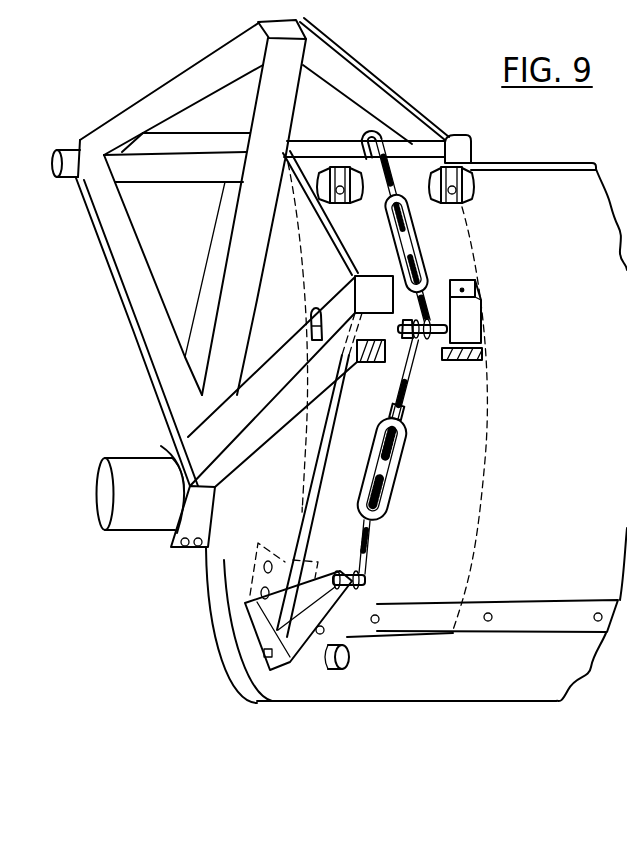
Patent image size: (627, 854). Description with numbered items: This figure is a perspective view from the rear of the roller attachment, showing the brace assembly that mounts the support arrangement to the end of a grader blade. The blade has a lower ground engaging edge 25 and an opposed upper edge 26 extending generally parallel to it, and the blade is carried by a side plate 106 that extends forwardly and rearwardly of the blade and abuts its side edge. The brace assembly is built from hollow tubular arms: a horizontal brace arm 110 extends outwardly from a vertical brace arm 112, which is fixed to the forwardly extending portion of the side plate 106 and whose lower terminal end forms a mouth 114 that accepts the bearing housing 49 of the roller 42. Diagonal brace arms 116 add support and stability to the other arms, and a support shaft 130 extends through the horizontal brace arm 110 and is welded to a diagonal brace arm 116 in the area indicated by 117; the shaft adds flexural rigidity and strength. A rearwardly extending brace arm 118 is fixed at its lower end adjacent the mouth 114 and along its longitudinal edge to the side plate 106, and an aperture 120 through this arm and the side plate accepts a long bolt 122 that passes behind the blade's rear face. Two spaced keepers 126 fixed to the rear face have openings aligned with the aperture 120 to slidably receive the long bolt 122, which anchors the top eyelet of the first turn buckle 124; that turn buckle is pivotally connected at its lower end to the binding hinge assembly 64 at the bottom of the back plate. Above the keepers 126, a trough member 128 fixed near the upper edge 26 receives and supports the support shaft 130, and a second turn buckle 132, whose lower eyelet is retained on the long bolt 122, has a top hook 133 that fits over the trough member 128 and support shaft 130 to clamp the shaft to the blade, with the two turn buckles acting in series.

The lower ground engaging edge 25 is at (503, 623).
The upper edge 26 is at (543, 163).
The roller 42 is at (506, 706).
The bearing housing 49 is at (138, 518).
The binding hinge assembly 64 is at (308, 664).
The side plate 106 is at (268, 525).
The horizontal brace arm 110 is at (173, 170).
The vertical brace arm 112 is at (280, 116).
The mouth 114 is at (163, 560).
The diagonal brace arms 116 is at (183, 82).
The weld area 117 is at (452, 129).
The rearwardly extending brace arm 118 is at (260, 423).
The aperture 120 is at (317, 313).
The long bolt 122 is at (429, 345).
The first turn buckle 124 is at (395, 482).
The keepers 126 is at (373, 363).
The trough member 128 is at (473, 183).
The support shaft 130 is at (63, 153).
The second turn buckle 132 is at (424, 258).
The top hook 133 is at (401, 124).